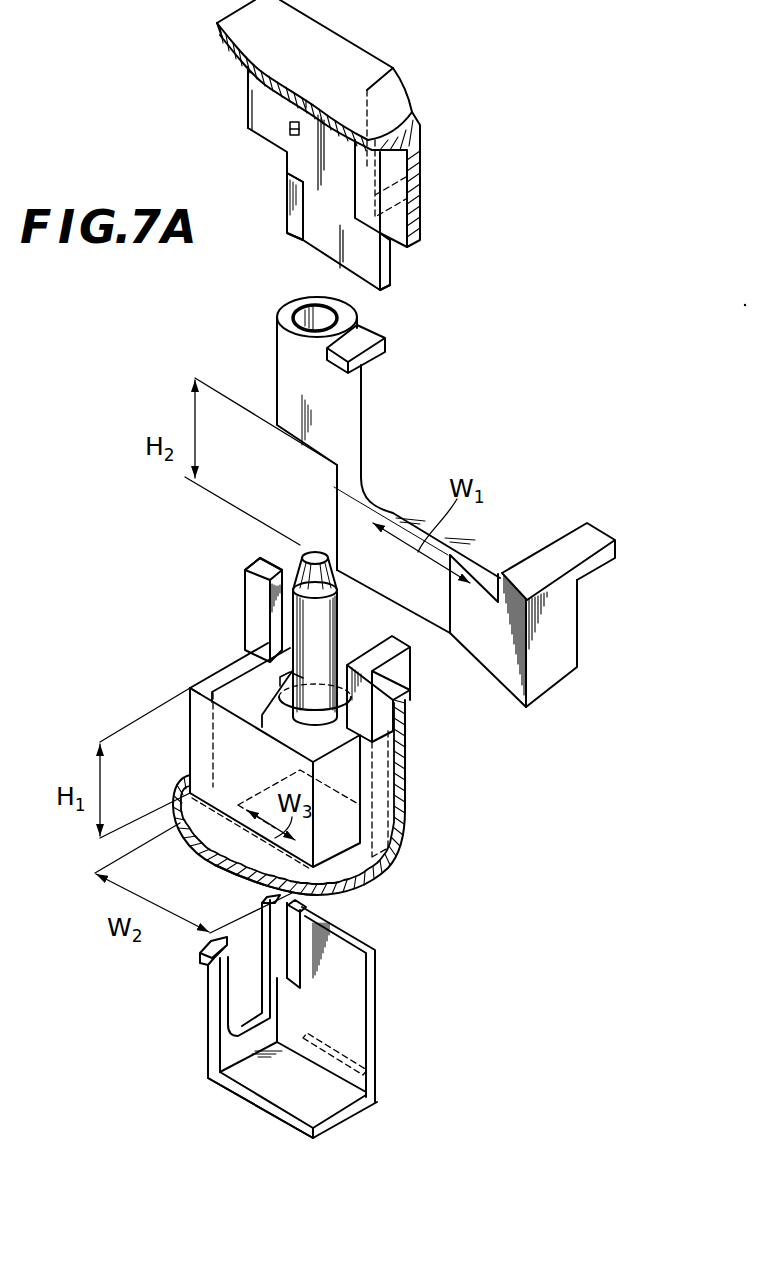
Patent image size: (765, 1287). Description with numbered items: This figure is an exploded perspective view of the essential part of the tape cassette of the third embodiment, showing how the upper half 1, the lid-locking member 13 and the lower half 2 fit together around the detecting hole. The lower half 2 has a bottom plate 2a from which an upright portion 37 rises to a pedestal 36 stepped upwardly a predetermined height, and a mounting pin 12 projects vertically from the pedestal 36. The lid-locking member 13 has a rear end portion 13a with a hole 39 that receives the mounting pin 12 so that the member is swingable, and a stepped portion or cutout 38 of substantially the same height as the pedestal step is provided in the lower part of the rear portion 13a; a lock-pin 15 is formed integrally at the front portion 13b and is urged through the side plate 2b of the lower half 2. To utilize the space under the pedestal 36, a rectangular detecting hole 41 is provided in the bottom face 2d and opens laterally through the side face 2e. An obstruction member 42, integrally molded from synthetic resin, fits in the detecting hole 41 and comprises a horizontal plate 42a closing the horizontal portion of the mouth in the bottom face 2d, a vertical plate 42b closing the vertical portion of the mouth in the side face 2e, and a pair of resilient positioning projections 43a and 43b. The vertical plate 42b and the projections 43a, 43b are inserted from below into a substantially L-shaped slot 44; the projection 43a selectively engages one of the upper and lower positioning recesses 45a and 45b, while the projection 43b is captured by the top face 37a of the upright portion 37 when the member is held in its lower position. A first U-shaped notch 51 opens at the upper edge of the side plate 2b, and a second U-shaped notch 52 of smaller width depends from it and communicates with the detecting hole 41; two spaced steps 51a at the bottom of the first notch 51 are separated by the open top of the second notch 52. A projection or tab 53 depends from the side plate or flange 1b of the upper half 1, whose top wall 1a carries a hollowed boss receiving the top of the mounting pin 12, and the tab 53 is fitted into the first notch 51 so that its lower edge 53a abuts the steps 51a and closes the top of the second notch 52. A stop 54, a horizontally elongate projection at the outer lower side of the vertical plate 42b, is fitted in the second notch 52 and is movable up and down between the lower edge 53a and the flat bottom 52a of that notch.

The upper half 1 is at (318, 157).
The top wall 1a is at (222, 43).
The side plate 1b is at (256, 86).
The upper positioning recess 45a is at (287, 131).
The lower positioning recess 45b is at (295, 208).
The projection 53 is at (374, 278).
The lower edge 53a is at (380, 303).
The lid-locking member 13 is at (416, 489).
The rear end portion 13a is at (299, 416).
The front portion 13b is at (497, 652).
The lock-pin 15 is at (586, 540).
The stepped portion 38 is at (339, 495).
The hole 39 is at (315, 314).
The mounting pin 12 is at (315, 552).
The lower half 2 is at (326, 729).
The bottom plate 2a is at (197, 845).
The side plate 2b is at (250, 582).
The bottom face 2d is at (233, 870).
The side face 2e is at (284, 570).
The pedestal 36 is at (280, 680).
The upright portion 37 is at (198, 738).
The top face 37a is at (191, 690).
The detecting hole 41 is at (275, 842).
The L-shaped slot 44 is at (219, 687).
The first U-shaped notch 51 is at (292, 588).
The steps 51a is at (283, 652).
The second U-shaped notch 52 is at (320, 676).
The flat bottom 52a is at (393, 753).
The obstruction member 42 is at (282, 1017).
The horizontal plate 42a is at (266, 1083).
The vertical plate 42b is at (362, 1036).
The positioning projection 43a is at (304, 905).
The positioning projection 43b is at (200, 960).
The stop 54 is at (370, 1082).